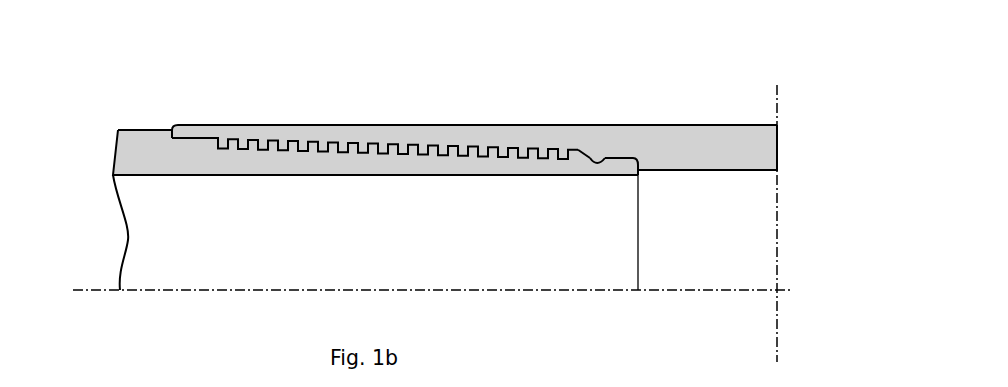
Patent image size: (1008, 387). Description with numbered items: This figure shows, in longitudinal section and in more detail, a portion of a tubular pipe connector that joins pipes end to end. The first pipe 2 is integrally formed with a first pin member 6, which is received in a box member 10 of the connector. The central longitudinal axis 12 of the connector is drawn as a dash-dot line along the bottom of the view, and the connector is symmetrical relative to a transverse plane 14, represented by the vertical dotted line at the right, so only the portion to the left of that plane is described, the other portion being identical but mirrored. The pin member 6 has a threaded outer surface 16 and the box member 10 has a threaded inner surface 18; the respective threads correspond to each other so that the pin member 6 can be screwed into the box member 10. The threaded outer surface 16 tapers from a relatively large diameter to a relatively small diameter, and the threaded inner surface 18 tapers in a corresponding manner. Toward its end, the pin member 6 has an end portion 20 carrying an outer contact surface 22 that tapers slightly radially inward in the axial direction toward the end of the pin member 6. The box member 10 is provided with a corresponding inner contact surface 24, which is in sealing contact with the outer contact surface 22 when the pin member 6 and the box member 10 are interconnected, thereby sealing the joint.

The first pipe 2 is at (141, 143).
The first pin member 6 is at (383, 162).
The box member 10 is at (755, 140).
The central longitudinal axis 12 is at (675, 292).
The transverse plane 14 is at (780, 314).
The threaded outer surface 16 is at (480, 152).
The threaded inner surface 18 is at (545, 160).
The end portion 20 is at (623, 160).
The outer contact surface 22 is at (630, 157).
The inner contact surface 24 is at (591, 152).